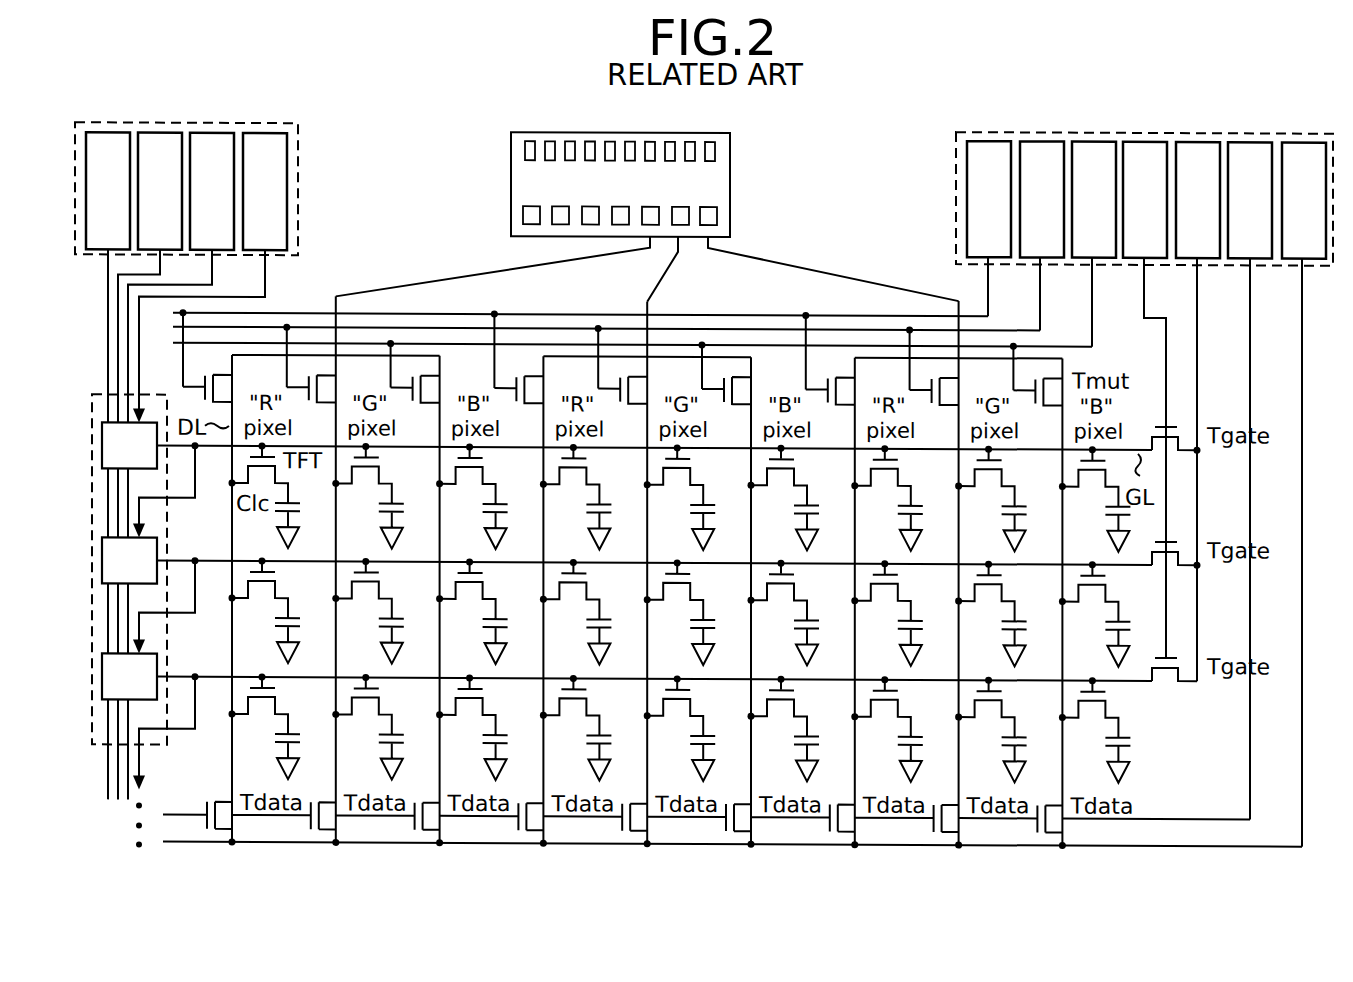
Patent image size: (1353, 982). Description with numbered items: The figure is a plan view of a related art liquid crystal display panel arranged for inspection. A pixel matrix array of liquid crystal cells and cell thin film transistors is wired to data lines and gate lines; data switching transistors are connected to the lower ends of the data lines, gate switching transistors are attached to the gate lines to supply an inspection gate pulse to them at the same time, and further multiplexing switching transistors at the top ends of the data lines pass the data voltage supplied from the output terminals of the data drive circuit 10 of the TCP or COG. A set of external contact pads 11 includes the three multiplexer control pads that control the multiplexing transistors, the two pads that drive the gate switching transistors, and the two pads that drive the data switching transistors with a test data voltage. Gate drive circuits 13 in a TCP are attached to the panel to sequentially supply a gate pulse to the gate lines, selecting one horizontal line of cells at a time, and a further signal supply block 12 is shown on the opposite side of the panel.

The data drive circuit 10 is at (735, 167).
The set of external contact pads 11 is at (956, 172).
The gate driving signal supply unit 12 is at (298, 156).
The gate drive circuits 13 is at (102, 397).